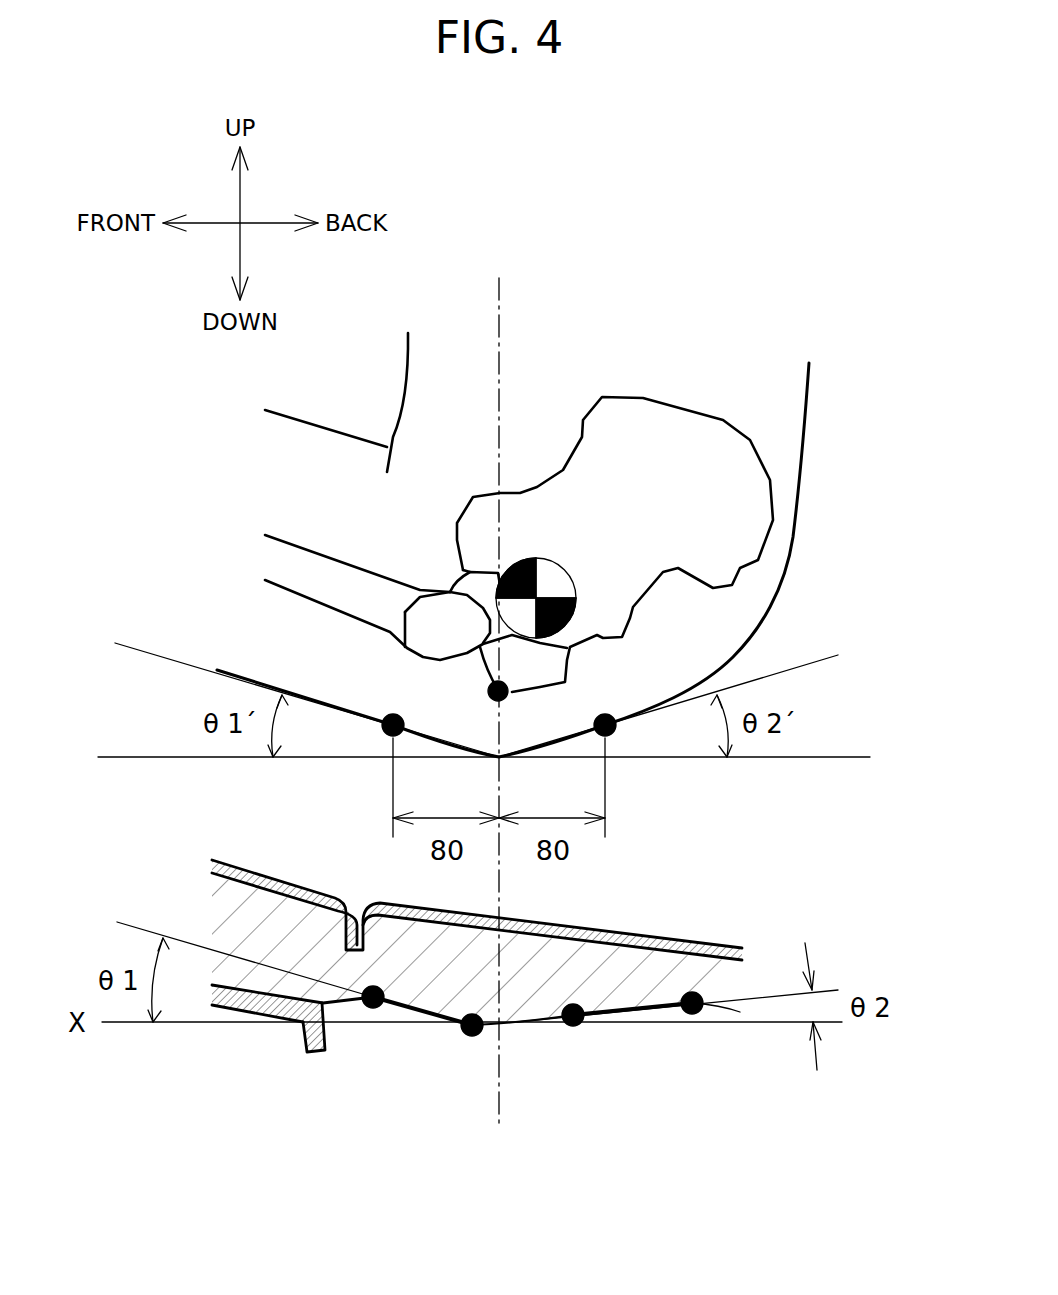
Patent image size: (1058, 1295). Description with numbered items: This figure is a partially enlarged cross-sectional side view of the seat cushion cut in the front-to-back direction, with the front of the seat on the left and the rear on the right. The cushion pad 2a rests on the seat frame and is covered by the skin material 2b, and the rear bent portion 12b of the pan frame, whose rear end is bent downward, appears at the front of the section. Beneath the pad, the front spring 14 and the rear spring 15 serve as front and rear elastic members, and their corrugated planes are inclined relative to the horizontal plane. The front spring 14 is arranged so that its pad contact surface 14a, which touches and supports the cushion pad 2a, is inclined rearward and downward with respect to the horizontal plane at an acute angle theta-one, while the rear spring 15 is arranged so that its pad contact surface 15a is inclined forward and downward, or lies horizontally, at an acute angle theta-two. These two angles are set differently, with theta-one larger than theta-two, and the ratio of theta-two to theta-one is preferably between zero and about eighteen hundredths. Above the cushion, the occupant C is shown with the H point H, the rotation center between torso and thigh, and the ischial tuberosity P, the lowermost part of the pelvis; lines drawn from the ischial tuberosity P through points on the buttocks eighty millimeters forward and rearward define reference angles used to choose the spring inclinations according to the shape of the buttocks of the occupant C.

The cushion pad 2a is at (707, 985).
The skin material 2b is at (620, 937).
The rear bent portion 12b is at (268, 1000).
The front spring 14 is at (455, 1035).
The pad contact surface 14a is at (420, 1003).
The rear spring 15 is at (585, 1027).
The pad contact surface 15a is at (630, 997).
The occupant C is at (778, 400).
The H point H is at (536, 598).
The ischial tuberosity P is at (508, 694).